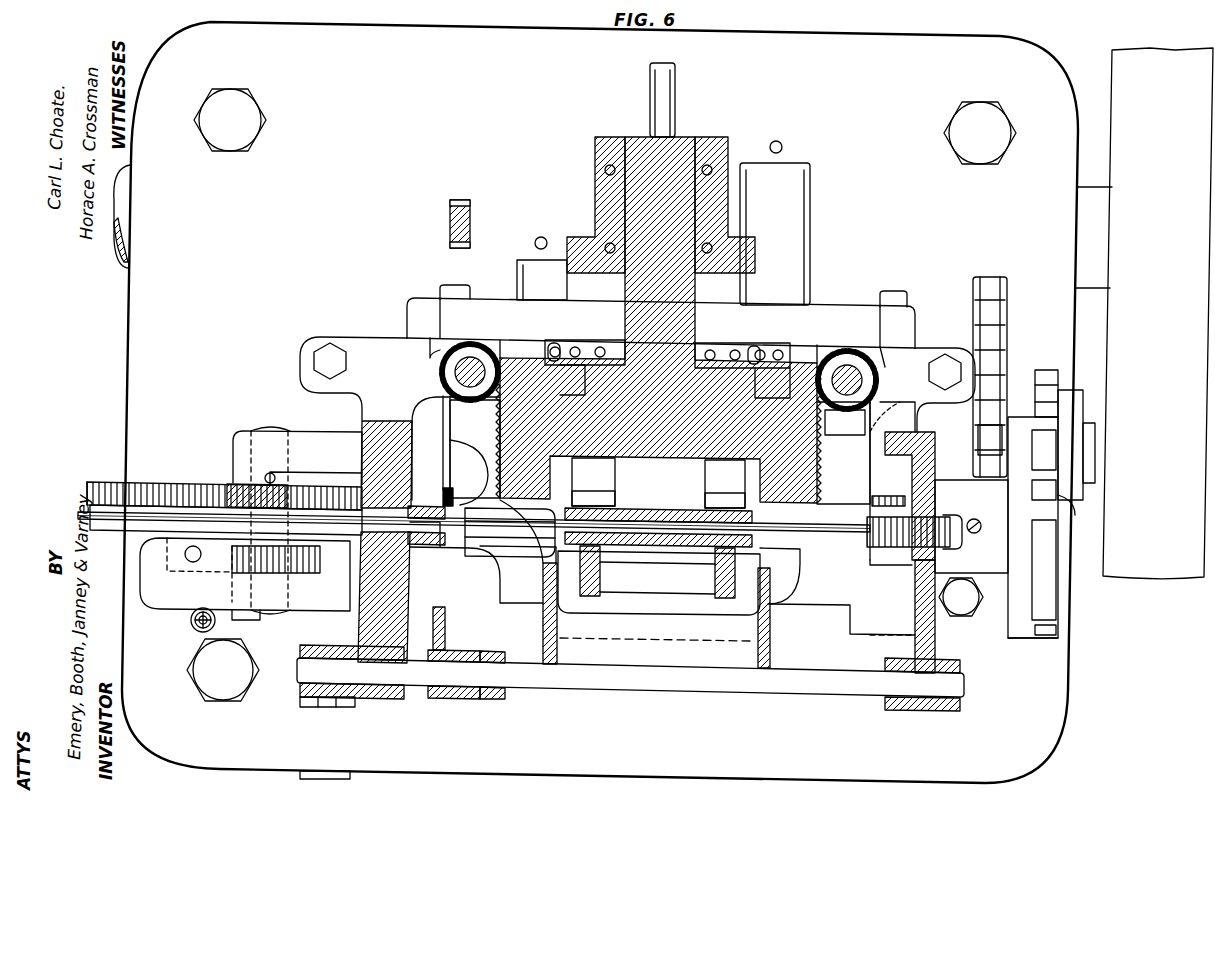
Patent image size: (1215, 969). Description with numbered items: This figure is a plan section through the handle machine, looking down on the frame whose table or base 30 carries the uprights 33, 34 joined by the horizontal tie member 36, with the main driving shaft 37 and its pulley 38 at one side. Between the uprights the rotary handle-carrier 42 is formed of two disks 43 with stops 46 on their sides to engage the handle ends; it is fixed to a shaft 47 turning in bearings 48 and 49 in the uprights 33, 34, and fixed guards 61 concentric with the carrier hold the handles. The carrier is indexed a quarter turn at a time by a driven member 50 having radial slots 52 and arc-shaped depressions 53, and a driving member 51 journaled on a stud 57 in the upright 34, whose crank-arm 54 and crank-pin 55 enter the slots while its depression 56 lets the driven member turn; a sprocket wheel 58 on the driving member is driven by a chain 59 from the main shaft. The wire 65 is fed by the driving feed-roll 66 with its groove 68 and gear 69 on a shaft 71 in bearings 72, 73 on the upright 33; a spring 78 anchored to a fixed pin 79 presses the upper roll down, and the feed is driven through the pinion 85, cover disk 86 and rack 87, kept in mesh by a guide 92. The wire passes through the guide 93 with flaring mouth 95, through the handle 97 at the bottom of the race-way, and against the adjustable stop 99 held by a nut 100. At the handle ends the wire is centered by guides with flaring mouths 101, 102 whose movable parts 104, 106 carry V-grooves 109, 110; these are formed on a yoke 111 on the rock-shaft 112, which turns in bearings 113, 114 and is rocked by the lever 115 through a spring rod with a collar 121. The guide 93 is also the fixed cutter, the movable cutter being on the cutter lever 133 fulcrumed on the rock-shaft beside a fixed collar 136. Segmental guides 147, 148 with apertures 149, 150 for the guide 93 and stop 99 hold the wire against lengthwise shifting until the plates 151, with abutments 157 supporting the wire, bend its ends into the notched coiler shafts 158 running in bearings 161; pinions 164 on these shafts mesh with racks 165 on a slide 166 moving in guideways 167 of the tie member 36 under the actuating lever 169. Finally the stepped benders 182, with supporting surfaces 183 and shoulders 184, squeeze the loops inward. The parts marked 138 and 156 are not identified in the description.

The table or base 30 is at (600, 402).
The upright 33 is at (407, 587).
The upright 34 is at (917, 610).
The horizontal tie member 36 is at (408, 302).
The main driving shaft 37 is at (116, 240).
The pulley 38 is at (1158, 313).
The rotary handle-carrier 42 is at (659, 596).
The disks 43 is at (715, 585).
The stops 46 is at (700, 598).
The shaft 47 is at (543, 575).
The bearing 48 is at (471, 472).
The bearing 49 is at (885, 580).
The driven member 50 is at (1020, 640).
The driving member 51 is at (1045, 370).
The radial slots 52 is at (1092, 645).
The arc-shaped depressions 53 is at (1043, 452).
The crank-arm 54 is at (1078, 510).
The crank-pin 55 is at (1058, 418).
The arc-shaped depression 56 is at (1040, 395).
The stud 57 is at (1098, 455).
The sprocket wheel 58 is at (978, 440).
The chain 59 is at (1007, 340).
The fixed guards 61 is at (600, 506).
The wire 65 is at (78, 516).
The driving feed-roll 66 is at (87, 492).
The groove 68 is at (125, 520).
The gear 69 is at (190, 468).
The shaft 71 is at (280, 425).
The bearing 72 is at (246, 625).
The bearing 73 is at (320, 430).
The spring 78 is at (198, 632).
The fixed pin 79 is at (192, 625).
The pinion 85 is at (276, 573).
The interposed disk 86 is at (185, 560).
The rack 87 is at (223, 575).
The guide 92 is at (150, 557).
The wire guide 93 is at (425, 544).
The flaring entrance or mouth 95 is at (340, 470).
The handle 97 is at (630, 360).
The adjustable stop 99 is at (974, 534).
The nut 100 is at (955, 522).
The flaring entrance or mouth 101 is at (490, 580).
The flaring entrance or mouth 102 is at (782, 618).
The relatively movable part 104 is at (593, 493).
The relatively movable part 106 is at (725, 493).
The groove 109 is at (530, 548).
The groove 110 is at (800, 576).
The yoke 111 is at (842, 619).
The rock-shaft 112 is at (645, 690).
The bearing 113 is at (393, 700).
The bearing 114 is at (905, 710).
The lever 115 is at (325, 709).
The collar 121 is at (325, 779).
The cutter lever 133 is at (440, 698).
The fixed collar 136 is at (495, 698).
The pin 138 is at (449, 222).
The guide 147 is at (456, 422).
The guide 148 is at (870, 458).
The aperture 149 is at (467, 493).
The aperture 150 is at (909, 496).
The wire-bending plates 151 is at (670, 483).
The pawl 156 is at (578, 345).
The abutments 157 is at (552, 342).
The coiler shafts 158 is at (440, 395).
The bearings 161 is at (395, 348).
The pinions 164 is at (445, 360).
The racks 165 is at (505, 415).
The slide 166 is at (545, 508).
The guideways 167 is at (600, 152).
The actuating lever 169 is at (663, 106).
The benders 182 is at (445, 345).
The supporting surfaces 183 is at (548, 340).
The lateral abutments or shoulders 184 is at (495, 338).